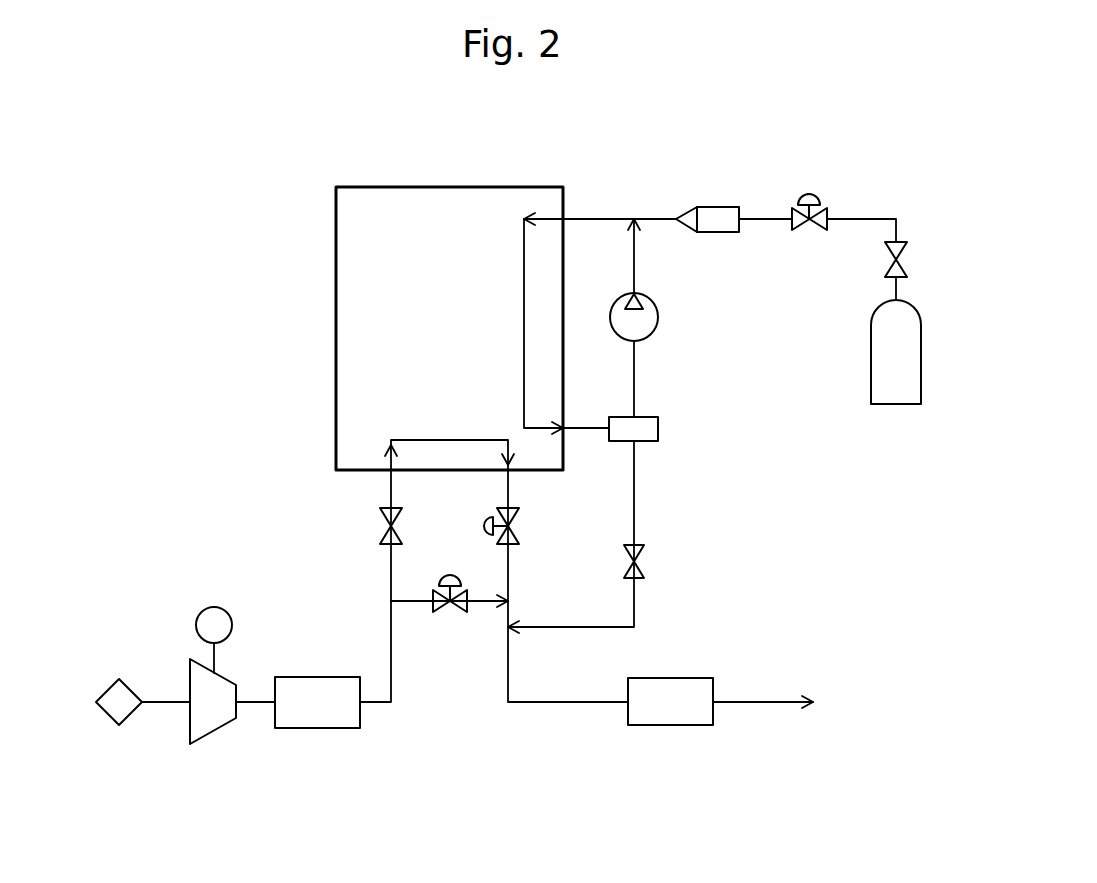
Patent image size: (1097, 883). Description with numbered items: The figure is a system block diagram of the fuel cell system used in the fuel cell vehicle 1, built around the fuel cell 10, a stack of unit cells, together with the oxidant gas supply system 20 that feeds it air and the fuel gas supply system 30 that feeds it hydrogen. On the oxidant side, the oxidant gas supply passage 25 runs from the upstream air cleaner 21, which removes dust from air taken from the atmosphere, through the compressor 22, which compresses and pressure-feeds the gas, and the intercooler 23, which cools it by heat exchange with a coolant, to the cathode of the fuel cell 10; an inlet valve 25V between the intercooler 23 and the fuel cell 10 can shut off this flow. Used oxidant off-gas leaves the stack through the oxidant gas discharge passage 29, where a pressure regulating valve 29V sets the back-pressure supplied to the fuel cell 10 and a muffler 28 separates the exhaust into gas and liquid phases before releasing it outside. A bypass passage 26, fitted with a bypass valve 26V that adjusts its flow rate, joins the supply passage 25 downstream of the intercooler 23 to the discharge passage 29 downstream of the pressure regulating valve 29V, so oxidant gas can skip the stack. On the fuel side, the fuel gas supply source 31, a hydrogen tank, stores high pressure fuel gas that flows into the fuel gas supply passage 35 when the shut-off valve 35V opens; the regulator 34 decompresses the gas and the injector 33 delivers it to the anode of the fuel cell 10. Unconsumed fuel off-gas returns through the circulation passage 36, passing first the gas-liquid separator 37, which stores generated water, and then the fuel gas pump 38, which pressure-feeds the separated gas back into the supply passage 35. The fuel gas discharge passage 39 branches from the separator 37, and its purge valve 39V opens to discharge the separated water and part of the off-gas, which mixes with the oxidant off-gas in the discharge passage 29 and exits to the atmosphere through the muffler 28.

The fuel cell vehicle 1 is at (833, 137).
The fuel cell 10 is at (352, 187).
The oxidant gas supply system 20 is at (242, 590).
The air cleaner 21 is at (113, 690).
The compressor 22 is at (215, 725).
The intercooler 23 is at (320, 721).
The oxidant gas supply passage 25 is at (391, 622).
The inlet valve 25V is at (380, 528).
The bypass passage 26 is at (483, 602).
The bypass valve 26V is at (442, 607).
The muffler 28 is at (665, 719).
The oxidant gas discharge passage 29 is at (508, 665).
The pressure regulating valve 29V is at (518, 528).
The fuel gas supply system 30 is at (775, 435).
The fuel gas supply source 31 is at (871, 376).
The injector 33 is at (718, 198).
The regulator 34 is at (808, 227).
The fuel gas supply passage 35 is at (647, 218).
The shut-off valve 35V is at (887, 268).
The circulation passage 36 is at (634, 378).
The gas-liquid separator 37 is at (657, 433).
The fuel gas pump 38 is at (653, 320).
The fuel gas discharge passage 39 is at (634, 612).
The purge valve 39V is at (640, 565).